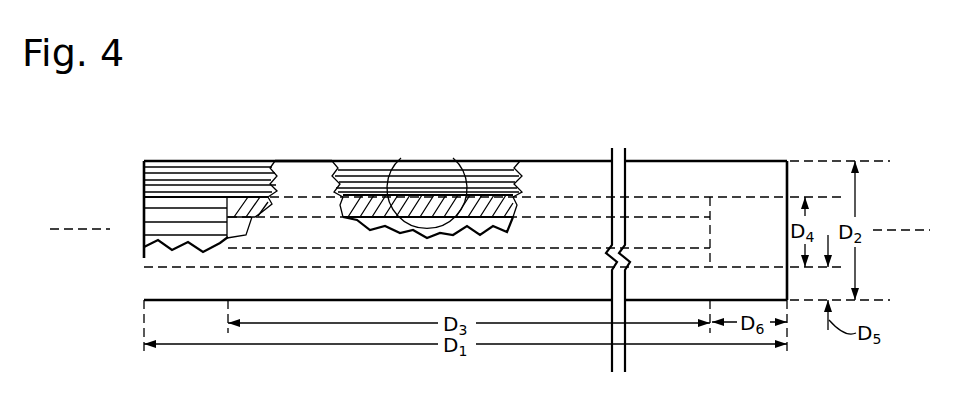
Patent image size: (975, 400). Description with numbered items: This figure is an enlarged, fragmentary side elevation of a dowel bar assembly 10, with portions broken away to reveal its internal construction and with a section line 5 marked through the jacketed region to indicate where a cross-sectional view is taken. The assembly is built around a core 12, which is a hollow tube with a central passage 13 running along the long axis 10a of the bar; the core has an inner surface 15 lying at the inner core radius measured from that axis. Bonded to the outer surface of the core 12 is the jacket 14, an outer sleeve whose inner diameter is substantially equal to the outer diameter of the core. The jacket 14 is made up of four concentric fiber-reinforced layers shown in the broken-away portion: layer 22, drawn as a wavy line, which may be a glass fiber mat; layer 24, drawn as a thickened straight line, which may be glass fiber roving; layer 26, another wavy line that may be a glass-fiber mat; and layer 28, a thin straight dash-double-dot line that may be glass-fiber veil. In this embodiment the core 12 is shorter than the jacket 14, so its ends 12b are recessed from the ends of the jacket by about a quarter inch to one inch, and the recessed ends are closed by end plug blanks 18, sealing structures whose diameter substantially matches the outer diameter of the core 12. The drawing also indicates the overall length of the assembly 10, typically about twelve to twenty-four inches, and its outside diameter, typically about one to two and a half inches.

The dowel bar assembly 10 is at (472, 88).
The long axis 10a is at (920, 230).
The core 12 is at (252, 197).
The ends of core 12b is at (227, 205).
The central passage 13 is at (631, 128).
The jacket 14 is at (300, 156).
The inner surface 15 is at (462, 222).
The end plug blanks 18 is at (153, 237).
The layer 22 is at (370, 190).
The layer 24 is at (352, 190).
The layer 26 is at (497, 168).
The layer 28 is at (488, 168).
The section line 5- 5 is at (427, 179).